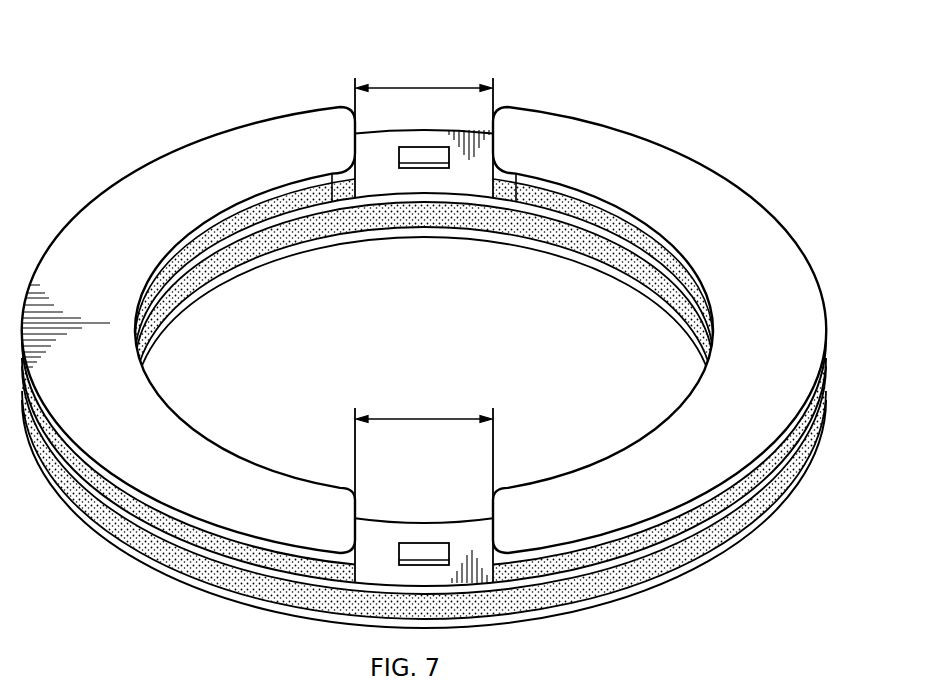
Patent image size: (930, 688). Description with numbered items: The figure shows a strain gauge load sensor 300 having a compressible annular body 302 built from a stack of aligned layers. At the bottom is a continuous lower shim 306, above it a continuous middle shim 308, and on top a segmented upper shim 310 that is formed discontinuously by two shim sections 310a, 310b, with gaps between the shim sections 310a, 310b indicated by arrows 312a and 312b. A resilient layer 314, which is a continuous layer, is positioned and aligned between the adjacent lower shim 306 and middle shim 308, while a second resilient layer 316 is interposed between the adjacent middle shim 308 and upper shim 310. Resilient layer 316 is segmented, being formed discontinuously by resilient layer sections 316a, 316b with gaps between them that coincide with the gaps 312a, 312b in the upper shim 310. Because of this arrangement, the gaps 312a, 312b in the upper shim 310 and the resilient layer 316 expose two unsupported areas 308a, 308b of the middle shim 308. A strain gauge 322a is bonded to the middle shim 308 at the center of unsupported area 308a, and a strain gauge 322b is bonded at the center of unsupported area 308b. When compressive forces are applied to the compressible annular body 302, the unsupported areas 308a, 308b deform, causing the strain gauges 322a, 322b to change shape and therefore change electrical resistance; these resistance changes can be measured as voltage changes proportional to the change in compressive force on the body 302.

The load sensor 300 is at (149, 65).
The compressible annular body 302 is at (75, 237).
The continuous lower shim 306 is at (200, 580).
The continuous middle shim 308 is at (120, 512).
The unsupported area 308a is at (380, 180).
The unsupported area 308b is at (412, 530).
The segmented upper shim 310 is at (148, 180).
The shim section 310a is at (233, 146).
The shim section 310b is at (617, 144).
The gap 312a is at (424, 86).
The gap 312b is at (424, 418).
The resilient layer 314 is at (158, 550).
The resilient layer 316 is at (255, 557).
The resilient layer section 316a is at (272, 210).
The resilient layer section 316b is at (578, 213).
The strain gauge 322a is at (436, 155).
The strain gauge 322b is at (428, 552).